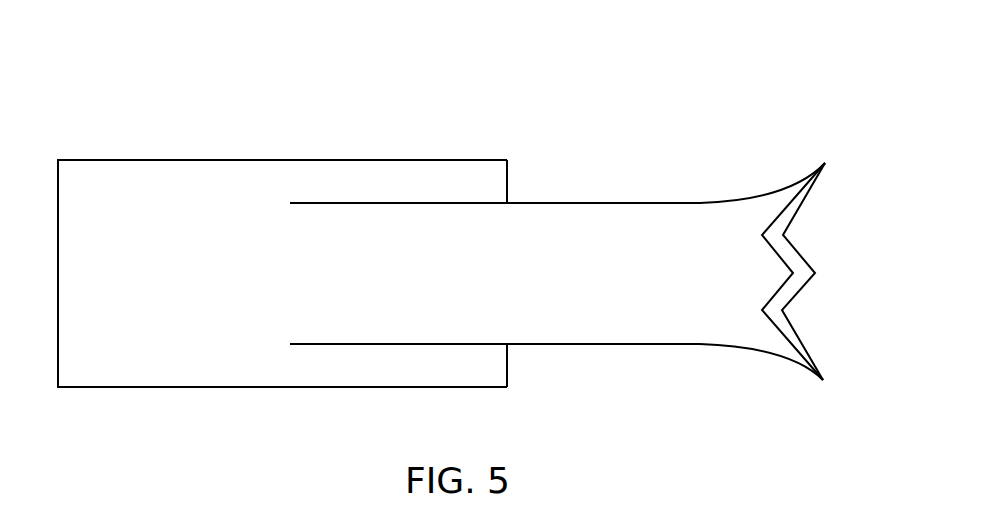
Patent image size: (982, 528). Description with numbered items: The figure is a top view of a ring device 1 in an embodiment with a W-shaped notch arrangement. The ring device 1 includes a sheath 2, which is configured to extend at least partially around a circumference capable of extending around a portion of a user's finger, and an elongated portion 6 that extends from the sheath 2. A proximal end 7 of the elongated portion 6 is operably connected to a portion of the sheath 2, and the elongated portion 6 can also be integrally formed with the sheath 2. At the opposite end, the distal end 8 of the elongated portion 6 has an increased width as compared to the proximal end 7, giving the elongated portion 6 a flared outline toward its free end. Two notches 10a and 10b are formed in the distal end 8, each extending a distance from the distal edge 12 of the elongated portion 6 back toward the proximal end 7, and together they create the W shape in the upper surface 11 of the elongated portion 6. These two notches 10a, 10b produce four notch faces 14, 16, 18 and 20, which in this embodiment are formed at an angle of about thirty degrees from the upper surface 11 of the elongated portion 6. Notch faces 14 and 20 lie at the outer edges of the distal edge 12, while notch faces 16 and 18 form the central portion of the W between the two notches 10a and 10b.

The ring device 1 is at (112, 140).
The sheath 2 is at (72, 378).
The elongated portion 6 is at (572, 210).
The proximal end of elongated portion 7 is at (435, 210).
The distal end of elongated portion 8 is at (780, 197).
The notch 10a is at (783, 316).
The notch 10b is at (784, 236).
The upper surface of elongated portion 11 is at (552, 335).
The distal edge of elongated portion 12 is at (823, 384).
The notch face 14 is at (778, 320).
The notch face 16 is at (782, 302).
The notch face 18 is at (791, 252).
The notch face 20 is at (826, 166).